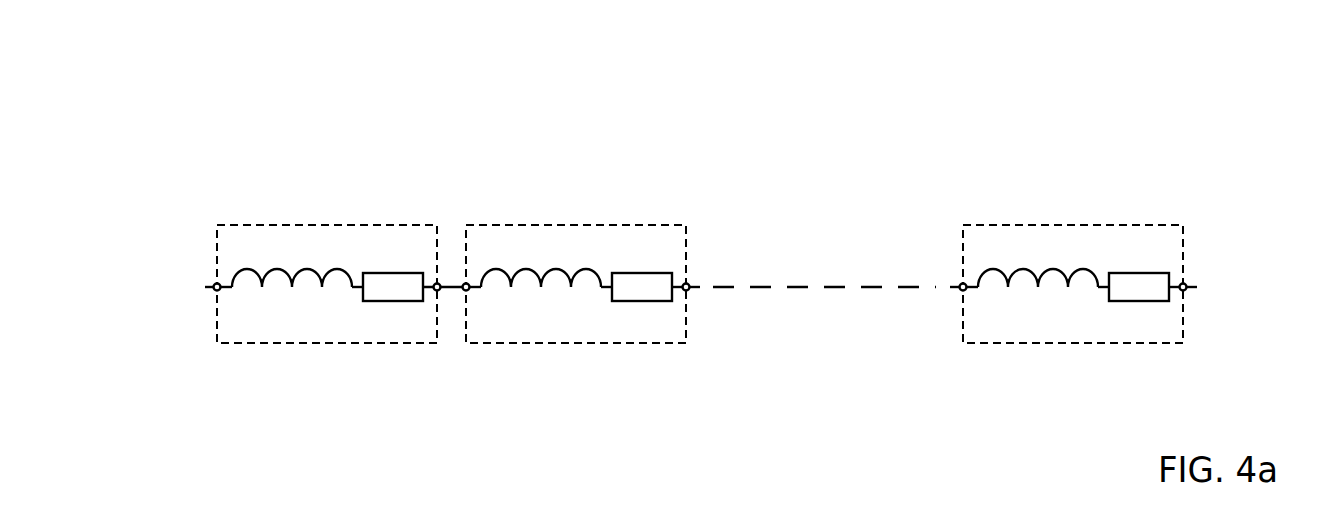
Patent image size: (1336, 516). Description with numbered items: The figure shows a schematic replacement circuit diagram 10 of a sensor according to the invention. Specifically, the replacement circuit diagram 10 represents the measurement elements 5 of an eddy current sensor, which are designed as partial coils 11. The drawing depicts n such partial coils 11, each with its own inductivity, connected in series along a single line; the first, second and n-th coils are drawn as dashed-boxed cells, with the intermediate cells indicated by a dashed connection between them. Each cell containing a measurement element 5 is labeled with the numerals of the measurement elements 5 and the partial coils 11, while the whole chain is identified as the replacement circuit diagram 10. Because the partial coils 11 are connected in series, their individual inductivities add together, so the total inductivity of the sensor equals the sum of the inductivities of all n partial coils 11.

The replacement circuit diagram 10 is at (180, 209).
The measurement elements 5 is at (710, 245).
The partial coils 11 is at (331, 206).